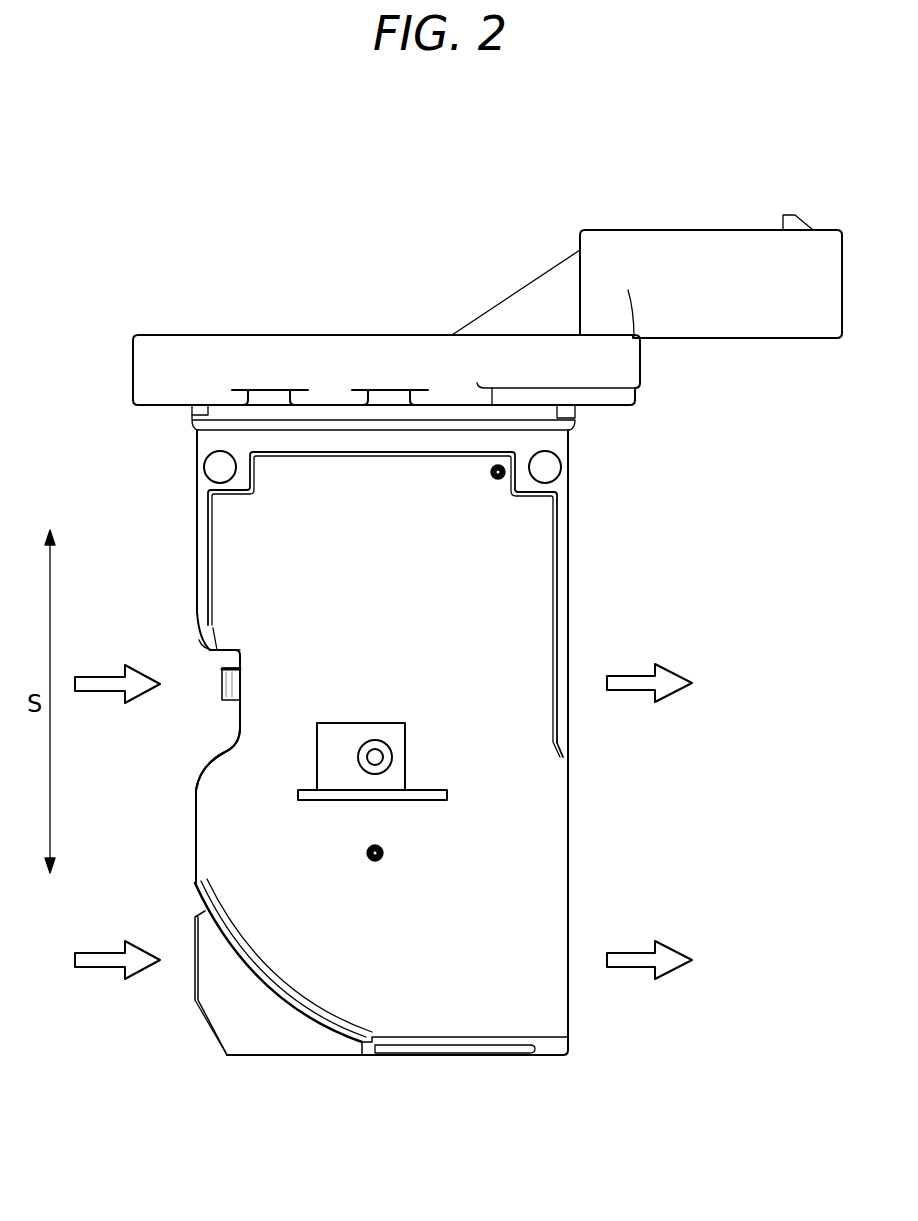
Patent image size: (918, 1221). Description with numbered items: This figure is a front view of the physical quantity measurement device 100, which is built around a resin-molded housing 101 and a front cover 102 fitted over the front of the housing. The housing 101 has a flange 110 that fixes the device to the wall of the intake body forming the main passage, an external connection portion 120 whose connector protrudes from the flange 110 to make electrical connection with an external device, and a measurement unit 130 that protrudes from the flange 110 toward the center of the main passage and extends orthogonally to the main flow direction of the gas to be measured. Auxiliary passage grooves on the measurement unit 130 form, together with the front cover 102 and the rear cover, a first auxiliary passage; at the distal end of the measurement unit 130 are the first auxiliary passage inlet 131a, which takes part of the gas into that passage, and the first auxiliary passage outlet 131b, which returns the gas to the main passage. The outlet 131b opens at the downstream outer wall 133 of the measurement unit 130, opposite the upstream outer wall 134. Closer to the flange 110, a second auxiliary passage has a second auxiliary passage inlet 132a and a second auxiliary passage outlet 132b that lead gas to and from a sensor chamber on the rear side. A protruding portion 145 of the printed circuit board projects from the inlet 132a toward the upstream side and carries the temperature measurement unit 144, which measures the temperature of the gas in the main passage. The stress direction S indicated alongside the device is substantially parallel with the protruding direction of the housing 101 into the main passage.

The physical quantity measurement device 100 is at (205, 183).
The housing 101 is at (760, 397).
The flange 110 is at (641, 360).
The external connection portion 120 is at (722, 340).
The measurement unit 130 is at (570, 502).
The front cover 102 is at (480, 630).
The downstream outer wall 133 is at (570, 567).
The upstream outer wall 134 is at (197, 512).
The temperature measurement unit 144 is at (213, 665).
The protruding portion 145 is at (220, 681).
The second auxiliary passage inlet 132a is at (222, 700).
The second auxiliary passage outlet 132b is at (570, 697).
The first auxiliary passage inlet 131a is at (190, 982).
The first auxiliary passage outlet 131b is at (568, 995).